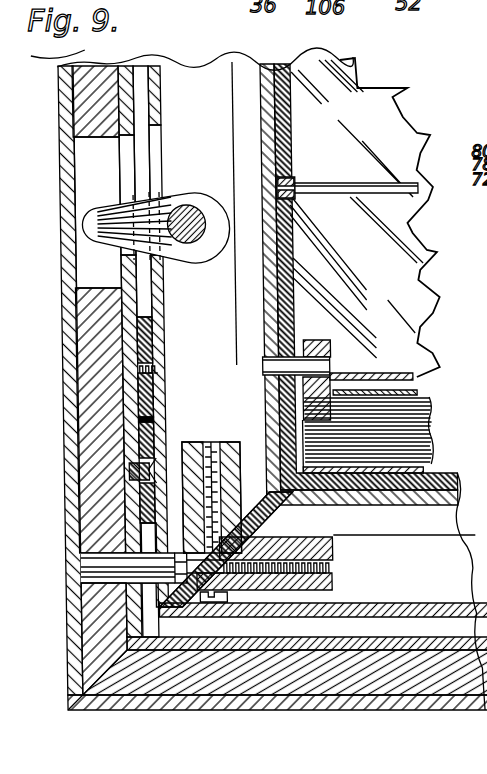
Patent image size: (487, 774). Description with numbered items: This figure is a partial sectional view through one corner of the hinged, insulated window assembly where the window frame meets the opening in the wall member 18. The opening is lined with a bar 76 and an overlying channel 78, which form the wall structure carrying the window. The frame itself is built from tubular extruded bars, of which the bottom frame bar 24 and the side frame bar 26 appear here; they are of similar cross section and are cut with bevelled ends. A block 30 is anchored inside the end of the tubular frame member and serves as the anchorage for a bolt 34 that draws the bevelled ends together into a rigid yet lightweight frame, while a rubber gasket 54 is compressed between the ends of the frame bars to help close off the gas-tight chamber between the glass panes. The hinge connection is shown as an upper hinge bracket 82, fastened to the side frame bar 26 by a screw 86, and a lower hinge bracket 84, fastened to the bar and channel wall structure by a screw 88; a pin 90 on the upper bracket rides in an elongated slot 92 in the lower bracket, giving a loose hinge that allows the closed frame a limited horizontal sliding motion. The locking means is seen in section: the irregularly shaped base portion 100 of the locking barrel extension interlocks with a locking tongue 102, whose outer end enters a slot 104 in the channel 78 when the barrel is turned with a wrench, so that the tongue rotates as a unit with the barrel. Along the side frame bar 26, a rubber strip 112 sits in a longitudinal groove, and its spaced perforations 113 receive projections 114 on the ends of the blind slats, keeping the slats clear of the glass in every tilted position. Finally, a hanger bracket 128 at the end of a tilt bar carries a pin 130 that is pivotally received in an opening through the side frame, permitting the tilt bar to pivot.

The wall member 18 is at (486, 113).
The bottom frame bar 24 is at (381, 603).
The side frame bar 26 is at (159, 77).
The block 30 is at (188, 442).
The bolt 34 is at (169, 570).
The rubber gasket 54 is at (158, 612).
The bar 76 is at (83, 108).
The channel 78 is at (123, 302).
The upper hinge bracket 82 is at (128, 323).
The lower hinge bracket 84 is at (131, 435).
The screw 86 is at (141, 372).
The screw 88 is at (119, 475).
The pin 90 is at (395, 403).
The elongated slot 92 is at (394, 428).
The base portion 100 is at (120, 207).
The locking tongue 102 is at (106, 236).
The slot 104 is at (122, 160).
The rubber strip 112 is at (288, 116).
The perforation 113 is at (290, 177).
The projection 114 is at (342, 221).
The hanger bracket 128 is at (318, 340).
The pin 130 is at (257, 365).